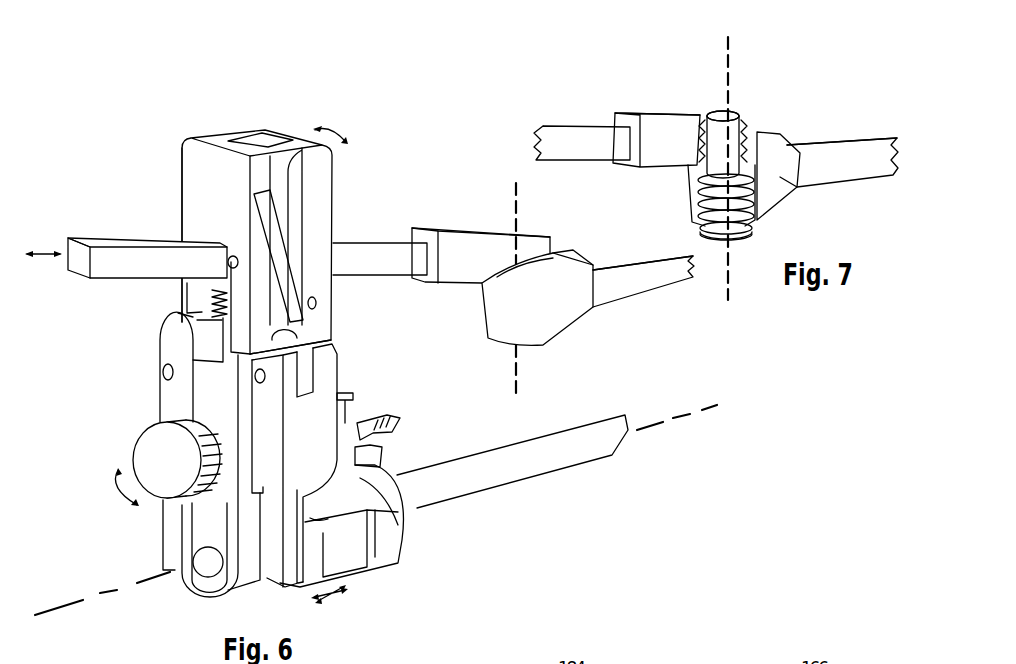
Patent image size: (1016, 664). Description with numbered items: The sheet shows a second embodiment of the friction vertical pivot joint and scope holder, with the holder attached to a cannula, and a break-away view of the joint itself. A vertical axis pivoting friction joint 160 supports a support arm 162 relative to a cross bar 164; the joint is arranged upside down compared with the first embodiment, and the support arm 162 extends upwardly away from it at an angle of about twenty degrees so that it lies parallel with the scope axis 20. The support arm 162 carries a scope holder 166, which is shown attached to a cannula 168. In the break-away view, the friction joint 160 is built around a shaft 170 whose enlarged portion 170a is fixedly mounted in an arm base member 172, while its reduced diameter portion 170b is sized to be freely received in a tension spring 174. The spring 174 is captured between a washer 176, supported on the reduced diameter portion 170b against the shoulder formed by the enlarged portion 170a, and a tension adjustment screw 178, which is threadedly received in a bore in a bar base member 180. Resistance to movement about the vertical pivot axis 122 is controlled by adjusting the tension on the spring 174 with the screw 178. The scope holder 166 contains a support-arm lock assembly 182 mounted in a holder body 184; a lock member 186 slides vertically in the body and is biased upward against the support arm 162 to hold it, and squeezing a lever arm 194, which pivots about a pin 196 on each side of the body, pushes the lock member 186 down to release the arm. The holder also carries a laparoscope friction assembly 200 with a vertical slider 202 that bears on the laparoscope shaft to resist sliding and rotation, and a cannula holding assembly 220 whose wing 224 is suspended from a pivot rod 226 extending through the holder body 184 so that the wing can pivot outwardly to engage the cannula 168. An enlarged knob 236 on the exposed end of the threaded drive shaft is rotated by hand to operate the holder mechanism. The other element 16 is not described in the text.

In FIG. 6, the slot in base 16 is at (345, 552).
In FIG. 6, the scope axis 20 is at (697, 420).
In FIG. 6, the vertical pivot axis 122 is at (516, 201).
In FIG. 7, the vertical pivot axis 122 is at (735, 37).
In FIG. 6, the vertical axis pivoting friction joint 160 is at (582, 338).
In FIG. 7, the vertical axis pivoting friction joint 160 is at (805, 104).
In FIG. 6, the support arm 162 is at (379, 262).
In FIG. 7, the support arm 162 is at (563, 123).
In FIG. 6, the cross bar 164 is at (644, 293).
In FIG. 7, the cross bar 164 is at (877, 173).
In FIG. 6, the scope holder 166 is at (168, 608).
In FIG. 6, the cannula 168 is at (405, 562).
In FIG. 7, the shaft 170 is at (735, 112).
In FIG. 7, the enlarged portion 170a is at (716, 110).
In FIG. 7, the reduced diameter portion 170b is at (690, 203).
In FIG. 6, the arm base member 172 is at (464, 283).
In FIG. 7, the arm base member 172 is at (628, 112).
In FIG. 7, the tension spring 174 is at (757, 200).
In FIG. 7, the washer 176 is at (748, 177).
In FIG. 7, the tension adjustment screw 178 is at (740, 234).
In FIG. 6, the bar base member 180 is at (525, 337).
In FIG. 7, the bar base member 180 is at (780, 180).
In FIG. 6, the support-arm lock assembly 182 is at (340, 184).
In FIG. 6, the holder body 184 is at (182, 190).
In FIG. 6, the lock member 186 is at (310, 347).
In FIG. 6, the lever arm 194 is at (293, 134).
In FIG. 6, the pin 196 is at (318, 303).
In FIG. 6, the laparoscope friction assembly 200 is at (113, 410).
In FIG. 6, the vertical slider 202 is at (177, 345).
In FIG. 6, the cannula holding assembly 220 is at (340, 610).
In FIG. 6, the wing 224 is at (323, 417).
In FIG. 6, the pivot rod 226 is at (310, 378).
In FIG. 6, the enlarged knob 236 is at (160, 466).